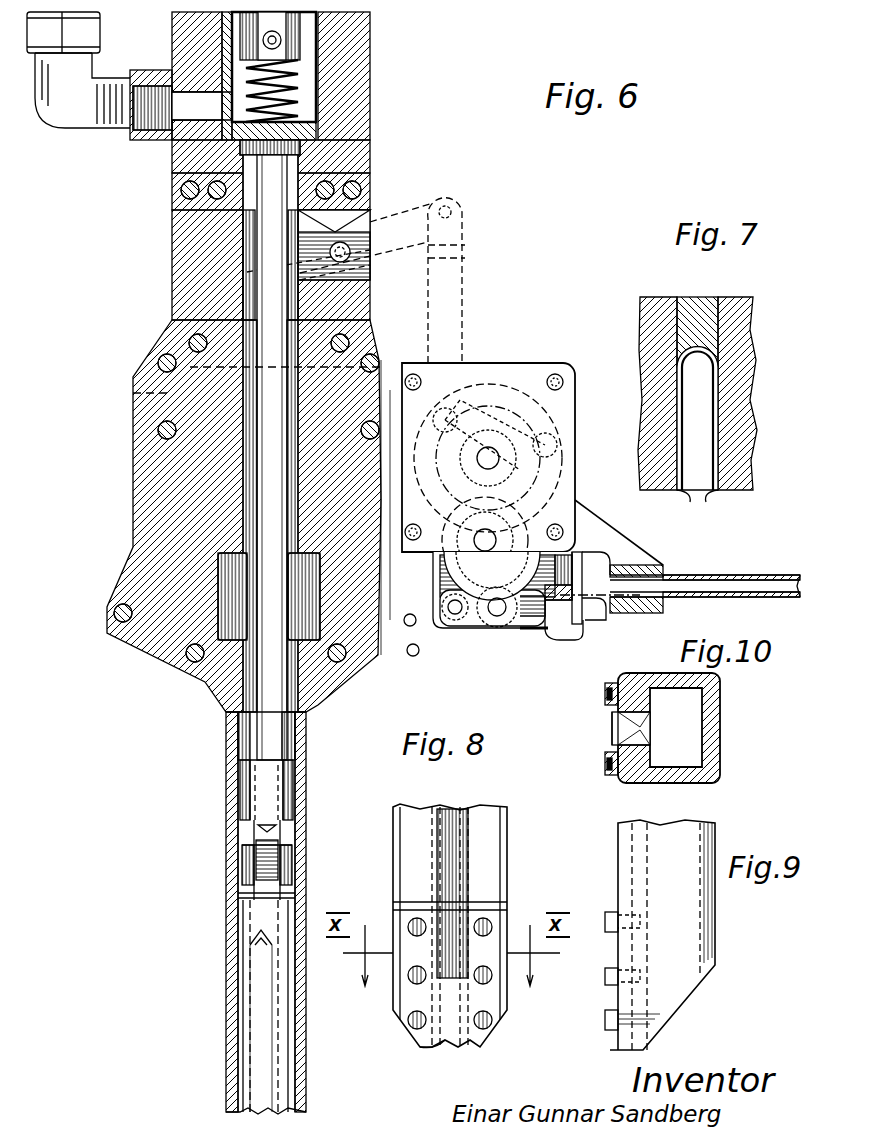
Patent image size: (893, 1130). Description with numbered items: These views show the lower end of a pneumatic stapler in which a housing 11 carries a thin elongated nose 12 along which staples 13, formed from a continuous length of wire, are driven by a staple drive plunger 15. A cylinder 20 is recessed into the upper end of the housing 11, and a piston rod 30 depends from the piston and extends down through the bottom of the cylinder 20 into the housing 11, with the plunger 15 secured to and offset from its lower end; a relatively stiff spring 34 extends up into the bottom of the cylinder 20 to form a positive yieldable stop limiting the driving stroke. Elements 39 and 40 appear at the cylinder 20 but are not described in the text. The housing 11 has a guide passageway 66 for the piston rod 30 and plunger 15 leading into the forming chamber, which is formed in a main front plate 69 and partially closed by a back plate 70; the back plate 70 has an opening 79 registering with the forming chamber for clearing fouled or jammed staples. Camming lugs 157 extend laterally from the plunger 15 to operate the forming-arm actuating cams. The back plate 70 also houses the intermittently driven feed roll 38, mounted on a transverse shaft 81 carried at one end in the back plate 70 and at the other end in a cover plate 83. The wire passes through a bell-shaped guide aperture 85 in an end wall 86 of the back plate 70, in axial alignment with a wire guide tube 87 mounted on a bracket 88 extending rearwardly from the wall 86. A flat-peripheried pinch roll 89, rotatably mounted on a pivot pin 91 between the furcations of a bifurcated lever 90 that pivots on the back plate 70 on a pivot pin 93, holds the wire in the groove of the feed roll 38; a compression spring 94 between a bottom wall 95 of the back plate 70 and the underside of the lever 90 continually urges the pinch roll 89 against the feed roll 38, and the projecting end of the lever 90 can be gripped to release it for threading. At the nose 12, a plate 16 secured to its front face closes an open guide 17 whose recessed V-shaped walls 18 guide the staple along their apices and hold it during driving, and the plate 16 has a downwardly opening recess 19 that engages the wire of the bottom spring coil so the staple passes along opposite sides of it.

In FIG. 6, the housing 11 is at (370, 148).
In FIG. 7, the nose 12 is at (650, 362).
In FIG. 10, the nose 12 is at (720, 740).
In FIG. 9, the nose 12 is at (715, 952).
In FIG. 6, the staples 13 is at (262, 943).
In FIG. 7, the staples 13 is at (715, 417).
In FIG. 6, the staple drive plunger 15 is at (263, 922).
In FIG. 7, the staple drive plunger 15 is at (700, 310).
In FIG. 10, the plate 16 is at (612, 775).
In FIG. 8, the plate 16 is at (483, 1040).
In FIG. 9, the plate 16 is at (605, 995).
In FIG. 7, the guide 17 is at (708, 498).
In FIG. 10, the guide 17 is at (637, 708).
In FIG. 8, the guide 17 is at (457, 813).
In FIG. 7, the V-shaped walls 18 is at (683, 496).
In FIG. 10, the V-shaped walls 18 is at (627, 743).
In FIG. 8, the recess 19 is at (440, 1045).
In FIG. 6, the cylinder 20 is at (232, 24).
In FIG. 6, the piston rod 30 is at (267, 230).
In FIG. 6, the spring 34 is at (300, 65).
In FIG. 6, the feed roll 38 is at (513, 565).
In FIG. 6, the elbow pipe fitting 39 is at (73, 128).
In FIG. 6, the nipple 40 is at (193, 107).
In FIG. 6, the guide passageway 66 is at (247, 470).
In FIG. 6, the main front plate 69 is at (405, 640).
In FIG. 6, the back plate 70 is at (448, 628).
In FIG. 6, the opening 79 is at (247, 583).
In FIG. 6, the transverse shaft 81 is at (475, 543).
In FIG. 6, the cover plate 83 is at (527, 377).
In FIG. 6, the guide aperture 85 is at (575, 595).
In FIG. 6, the end wall 86 is at (578, 610).
In FIG. 6, the wire guide tube 87 is at (745, 578).
In FIG. 6, the bracket 88 is at (632, 550).
In FIG. 6, the pinch roll 89 is at (498, 612).
In FIG. 6, the bifurcated lever 90 is at (532, 612).
In FIG. 6, the pivot pin 91 is at (447, 617).
In FIG. 6, the pivot pin 93 is at (410, 630).
In FIG. 6, the compression spring 94 is at (547, 628).
In FIG. 6, the bottom wall 95 is at (533, 631).
In FIG. 6, the camming lugs 157 is at (238, 890).